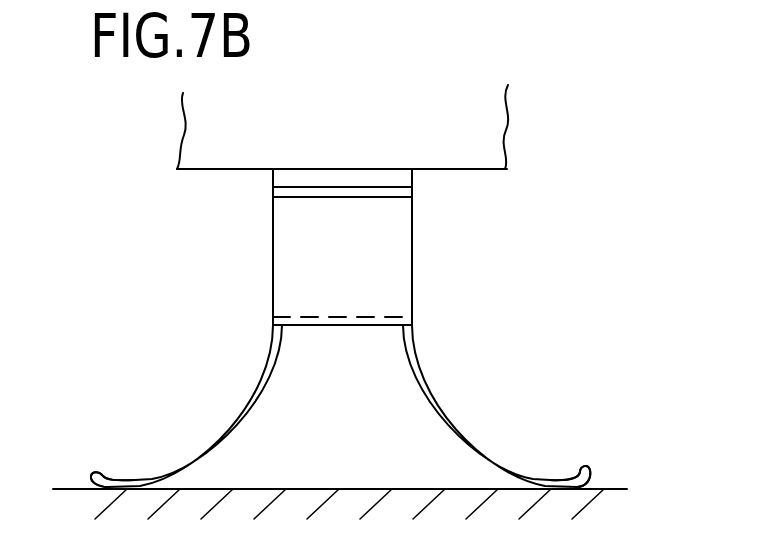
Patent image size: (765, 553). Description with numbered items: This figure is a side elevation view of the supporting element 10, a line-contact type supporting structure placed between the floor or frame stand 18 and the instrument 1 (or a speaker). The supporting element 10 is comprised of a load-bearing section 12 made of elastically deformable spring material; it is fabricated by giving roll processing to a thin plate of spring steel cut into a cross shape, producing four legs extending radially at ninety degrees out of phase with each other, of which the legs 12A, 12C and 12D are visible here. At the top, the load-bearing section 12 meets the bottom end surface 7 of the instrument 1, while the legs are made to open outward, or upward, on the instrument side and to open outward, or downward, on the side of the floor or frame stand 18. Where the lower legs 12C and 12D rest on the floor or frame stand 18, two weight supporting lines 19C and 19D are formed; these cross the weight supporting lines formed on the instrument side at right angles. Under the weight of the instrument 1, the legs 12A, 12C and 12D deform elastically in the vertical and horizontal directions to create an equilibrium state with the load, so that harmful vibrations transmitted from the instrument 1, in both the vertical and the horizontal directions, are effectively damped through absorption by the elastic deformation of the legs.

The bottom end surface 7 is at (346, 168).
The instrument 1 is at (486, 123).
The load-bearing section 12 is at (293, 286).
The leg 12A is at (386, 262).
The supporting element 10 is at (423, 348).
The leg 12C is at (238, 427).
The leg 12D is at (427, 398).
The weight supporting line 19C is at (137, 487).
The weight supporting line 19D is at (576, 466).
The frame stand 18 is at (305, 487).